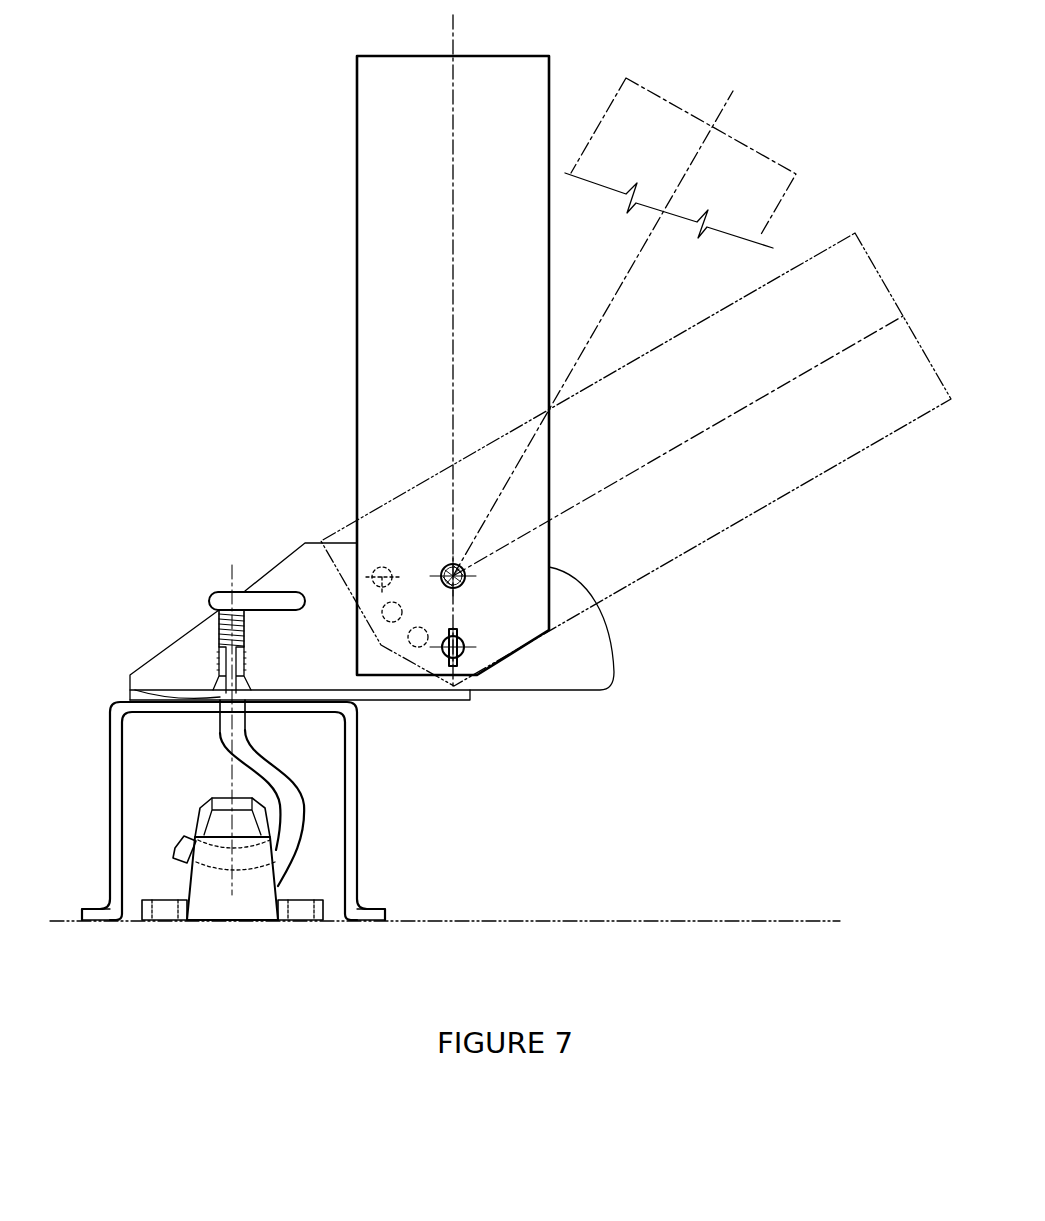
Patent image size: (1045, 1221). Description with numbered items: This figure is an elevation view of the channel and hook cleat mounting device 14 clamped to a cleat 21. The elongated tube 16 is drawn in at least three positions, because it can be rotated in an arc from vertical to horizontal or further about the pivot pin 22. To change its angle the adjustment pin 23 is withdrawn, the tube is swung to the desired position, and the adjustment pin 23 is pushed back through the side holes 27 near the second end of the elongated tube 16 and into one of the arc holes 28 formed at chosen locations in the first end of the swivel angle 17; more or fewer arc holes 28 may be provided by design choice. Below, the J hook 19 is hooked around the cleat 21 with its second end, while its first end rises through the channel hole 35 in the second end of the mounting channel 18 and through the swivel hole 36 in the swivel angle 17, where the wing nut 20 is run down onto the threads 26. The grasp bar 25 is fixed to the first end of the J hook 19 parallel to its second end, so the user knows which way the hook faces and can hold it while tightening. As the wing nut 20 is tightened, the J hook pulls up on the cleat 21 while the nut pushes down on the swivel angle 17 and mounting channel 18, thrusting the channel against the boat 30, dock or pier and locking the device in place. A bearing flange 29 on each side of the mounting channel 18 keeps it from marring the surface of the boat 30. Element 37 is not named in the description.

The channel and hook cleat mounting device 14 is at (585, 691).
The elongated tube 16 is at (357, 168).
The swivel angle 17 is at (520, 691).
The mounting channel 18 is at (355, 812).
The J hook 19 is at (293, 782).
The wing nut 20 is at (215, 686).
The cleat 21 is at (277, 882).
The pivot pin 22 is at (463, 572).
The adjustment pin 23 is at (466, 645).
The grasp bar 25 is at (220, 590).
The threads 26 is at (220, 625).
The side holes 27 is at (472, 586).
The arc holes 28 is at (425, 645).
The bearing flange 29 is at (92, 908).
The boat 30 is at (462, 920).
The channel hole 35 is at (215, 705).
The swivel hole 36 is at (132, 676).
The slot 37 is at (466, 655).